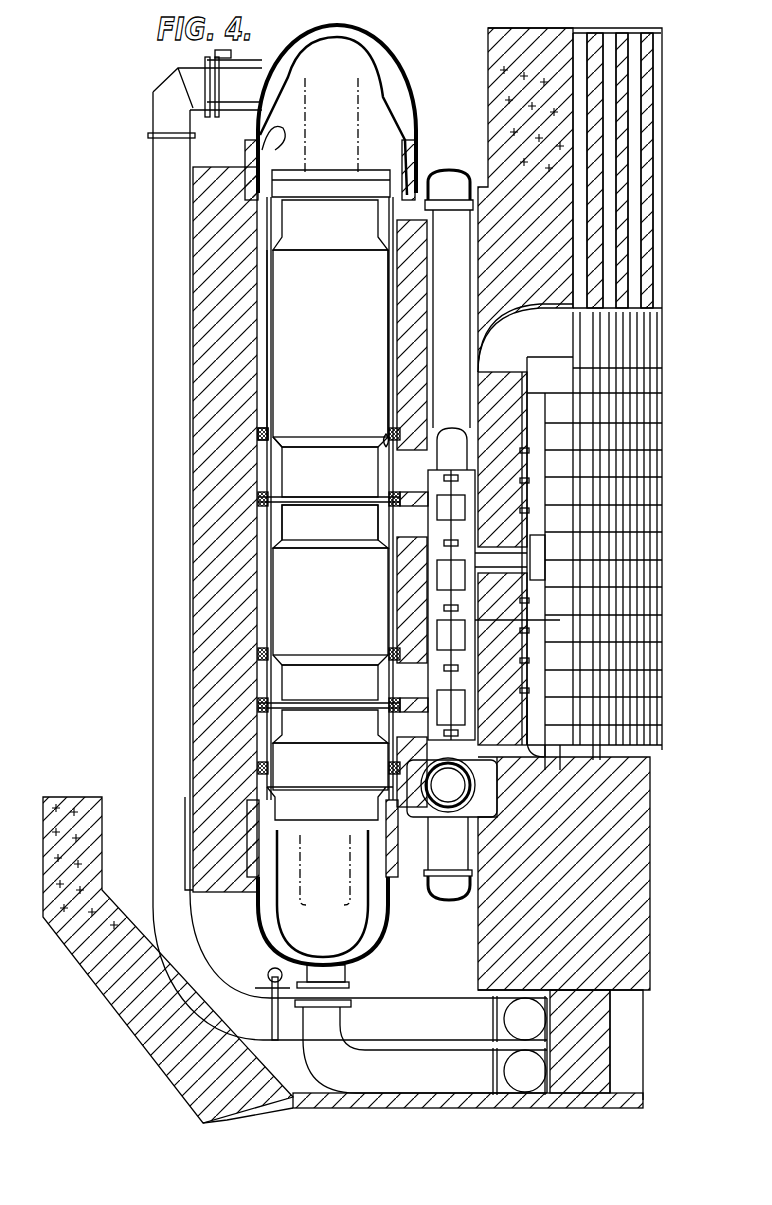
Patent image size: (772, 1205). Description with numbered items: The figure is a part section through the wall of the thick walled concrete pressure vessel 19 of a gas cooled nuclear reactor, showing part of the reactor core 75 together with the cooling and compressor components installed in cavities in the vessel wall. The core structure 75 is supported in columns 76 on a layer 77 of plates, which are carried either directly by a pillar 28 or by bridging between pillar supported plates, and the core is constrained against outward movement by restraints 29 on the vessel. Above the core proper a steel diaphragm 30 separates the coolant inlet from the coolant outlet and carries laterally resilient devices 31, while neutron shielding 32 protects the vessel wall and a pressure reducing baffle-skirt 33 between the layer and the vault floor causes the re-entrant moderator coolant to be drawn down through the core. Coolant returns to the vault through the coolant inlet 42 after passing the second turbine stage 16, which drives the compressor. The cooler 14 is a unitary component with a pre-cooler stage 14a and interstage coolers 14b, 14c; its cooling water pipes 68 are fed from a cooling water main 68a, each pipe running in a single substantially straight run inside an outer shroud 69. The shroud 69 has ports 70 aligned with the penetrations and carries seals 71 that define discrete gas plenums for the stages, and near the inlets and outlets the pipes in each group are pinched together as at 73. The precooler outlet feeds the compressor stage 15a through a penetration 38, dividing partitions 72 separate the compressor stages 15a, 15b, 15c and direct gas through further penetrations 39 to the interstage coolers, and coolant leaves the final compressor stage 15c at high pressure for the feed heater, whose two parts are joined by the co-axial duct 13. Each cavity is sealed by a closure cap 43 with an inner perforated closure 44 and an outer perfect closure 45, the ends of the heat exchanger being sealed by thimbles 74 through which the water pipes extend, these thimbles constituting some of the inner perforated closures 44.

The co-axial duct 13 is at (452, 817).
The cooler 14 is at (339, 362).
The pre-cooler stage 14a is at (360, 385).
The interstage cooler 14b is at (350, 617).
The interstage cooler 14c is at (350, 777).
The compressor stage 15a is at (437, 505).
The compressor stage 15b is at (455, 716).
The final compressor stage 15c is at (469, 640).
The second turbine stage 16 is at (462, 578).
The concrete pressure vessel 19 is at (543, 234).
The pillar 28 is at (548, 750).
The restraints 29 is at (520, 448).
The steel diaphragm 30 is at (533, 357).
The laterally resilient devices 31 is at (532, 310).
The neutron shielding 32 is at (527, 468).
The pressure reducing baffle-skirt 33 is at (528, 705).
The penetration 38 is at (403, 472).
The penetrations 39 is at (400, 522).
The coolant inlet 42 is at (537, 565).
The closure cap 43 is at (385, 66).
The inner perforated closure 44 is at (382, 98).
The outer perfect closure 45 is at (412, 118).
The cooling water pipe 68 is at (310, 162).
The cooling water main 68a is at (190, 268).
The outer shroud 69 is at (268, 307).
The ports 70 is at (386, 447).
The seals 71 is at (262, 433).
The dividing partitions 72 is at (258, 498).
The pinched pipe region 73 is at (280, 470).
The thimbles 74 is at (280, 128).
The nuclear reactor core 75 is at (553, 623).
The columns 76 is at (594, 712).
The layer of plates 77 is at (628, 715).